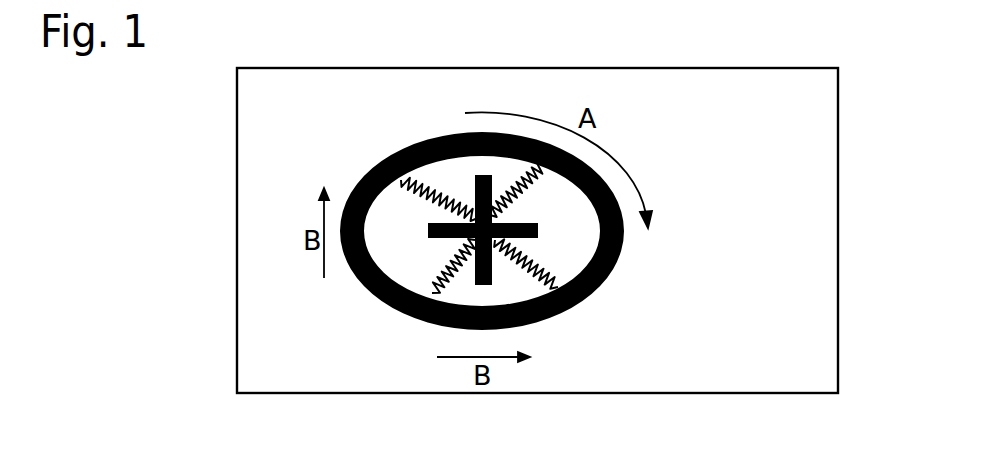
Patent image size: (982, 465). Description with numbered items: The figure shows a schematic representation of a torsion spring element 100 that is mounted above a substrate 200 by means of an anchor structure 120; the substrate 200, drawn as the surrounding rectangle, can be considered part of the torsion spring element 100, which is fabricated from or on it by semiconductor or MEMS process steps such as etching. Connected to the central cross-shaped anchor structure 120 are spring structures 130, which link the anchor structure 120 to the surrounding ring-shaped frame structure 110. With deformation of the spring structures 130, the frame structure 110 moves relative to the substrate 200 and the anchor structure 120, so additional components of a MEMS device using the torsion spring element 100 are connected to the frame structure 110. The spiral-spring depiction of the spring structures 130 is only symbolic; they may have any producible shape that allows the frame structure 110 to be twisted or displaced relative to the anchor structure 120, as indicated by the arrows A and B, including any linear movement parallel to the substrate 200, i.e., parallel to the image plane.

The torsion spring element 100 is at (687, 39).
The frame structure 110 is at (603, 283).
The anchor structure 120 is at (516, 222).
The spring structures 130 is at (447, 260).
The substrate 200 is at (839, 230).